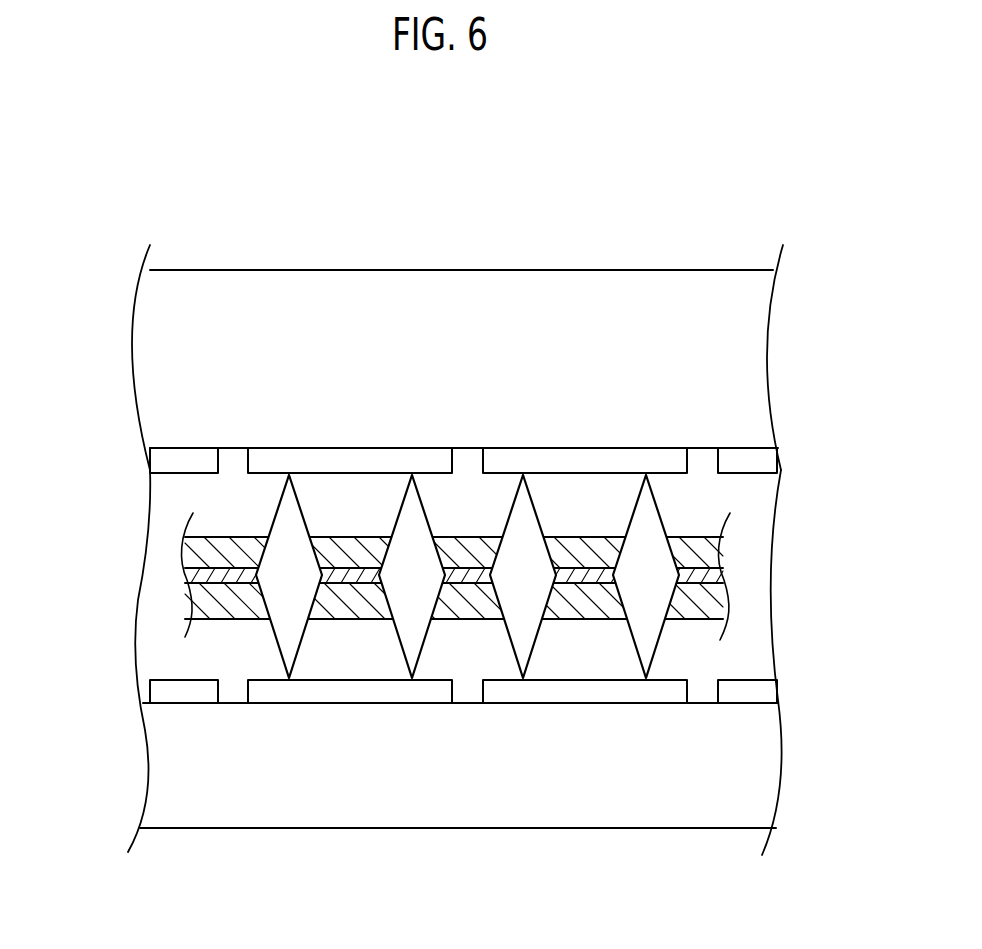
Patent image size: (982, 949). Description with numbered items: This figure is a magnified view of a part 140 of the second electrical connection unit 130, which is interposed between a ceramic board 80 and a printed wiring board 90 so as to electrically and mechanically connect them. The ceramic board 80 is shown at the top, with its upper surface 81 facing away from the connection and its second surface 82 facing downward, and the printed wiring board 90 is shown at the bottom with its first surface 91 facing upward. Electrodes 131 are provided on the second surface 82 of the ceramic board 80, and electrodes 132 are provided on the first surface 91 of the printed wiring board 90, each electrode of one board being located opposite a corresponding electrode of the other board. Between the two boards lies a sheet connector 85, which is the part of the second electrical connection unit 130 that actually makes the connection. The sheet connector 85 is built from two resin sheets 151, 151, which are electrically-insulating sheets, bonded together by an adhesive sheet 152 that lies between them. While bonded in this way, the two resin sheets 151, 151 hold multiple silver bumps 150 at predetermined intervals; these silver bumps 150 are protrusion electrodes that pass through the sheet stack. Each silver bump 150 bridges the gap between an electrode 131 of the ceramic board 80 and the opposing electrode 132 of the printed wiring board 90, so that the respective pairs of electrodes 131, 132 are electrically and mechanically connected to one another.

The ceramic board 80 is at (140, 375).
The upper surface of first substrate 81 is at (500, 268).
The second surface 82 is at (172, 451).
The sheet connector 85 is at (368, 576).
The printed wiring board 90 is at (148, 745).
The first surface 91 is at (466, 700).
The second electrical connection unit 130 is at (797, 473).
The electrodes 131 is at (184, 458).
The electrodes 132 is at (193, 700).
The part 140 is at (453, 830).
The silver bumps 150 is at (285, 630).
The resin sheets 151 is at (183, 547).
The adhesive sheet 152 is at (185, 578).